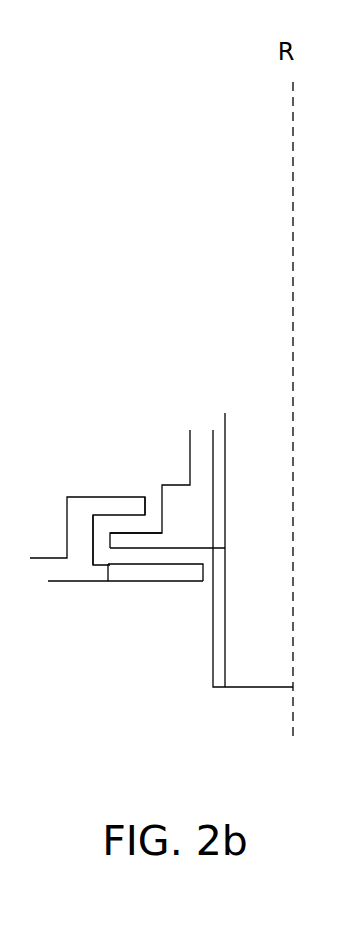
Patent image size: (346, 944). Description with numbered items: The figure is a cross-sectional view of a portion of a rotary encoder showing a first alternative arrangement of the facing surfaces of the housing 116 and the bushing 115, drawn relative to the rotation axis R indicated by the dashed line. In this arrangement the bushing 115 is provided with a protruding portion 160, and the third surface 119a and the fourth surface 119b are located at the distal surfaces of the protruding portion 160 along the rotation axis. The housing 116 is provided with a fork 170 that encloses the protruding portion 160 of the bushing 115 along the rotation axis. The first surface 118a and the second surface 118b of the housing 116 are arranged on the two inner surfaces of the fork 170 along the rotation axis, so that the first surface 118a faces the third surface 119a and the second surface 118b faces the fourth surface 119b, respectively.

The housing 116 is at (64, 583).
The first surface 118a is at (136, 551).
The second surface 118b is at (183, 561).
The bushing 115 is at (191, 452).
The fork 170 is at (100, 567).
The protruding portion 160 is at (118, 543).
The third surface 119a is at (122, 529).
The fourth surface 119b is at (140, 522).